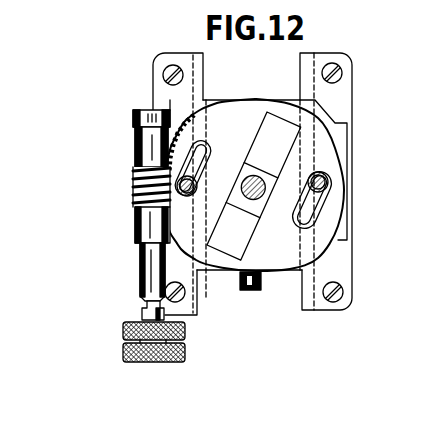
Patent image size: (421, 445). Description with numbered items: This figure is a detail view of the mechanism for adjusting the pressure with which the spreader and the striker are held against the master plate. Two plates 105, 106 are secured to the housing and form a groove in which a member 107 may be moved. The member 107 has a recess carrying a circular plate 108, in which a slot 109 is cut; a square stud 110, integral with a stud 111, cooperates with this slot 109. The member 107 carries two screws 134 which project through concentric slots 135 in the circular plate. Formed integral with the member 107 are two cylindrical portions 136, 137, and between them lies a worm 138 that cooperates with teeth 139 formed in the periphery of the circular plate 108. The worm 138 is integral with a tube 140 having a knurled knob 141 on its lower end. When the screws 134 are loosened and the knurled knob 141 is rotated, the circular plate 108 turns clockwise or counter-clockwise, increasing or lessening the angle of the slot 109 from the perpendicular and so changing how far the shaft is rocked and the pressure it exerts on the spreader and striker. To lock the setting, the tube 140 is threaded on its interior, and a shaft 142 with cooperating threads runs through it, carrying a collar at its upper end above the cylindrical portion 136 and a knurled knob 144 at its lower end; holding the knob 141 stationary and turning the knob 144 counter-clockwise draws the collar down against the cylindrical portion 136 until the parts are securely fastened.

The plate 105 is at (188, 56).
The plate 106 is at (331, 56).
The member 107 is at (340, 144).
The circular plate 108 is at (250, 110).
The slot 109 is at (263, 130).
The square stud 110 is at (262, 203).
The stud 111 is at (255, 177).
The screws 134 is at (201, 183).
The concentric slots 135 is at (200, 147).
The cylindrical portion 136 is at (142, 144).
The cylindrical portion 137 is at (138, 228).
The worm 138 is at (135, 184).
The teeth 139 is at (193, 127).
The tube 140 is at (150, 271).
The knurled knob 141 is at (123, 325).
The shaft 142 is at (153, 307).
The knurled knob 144 is at (124, 349).